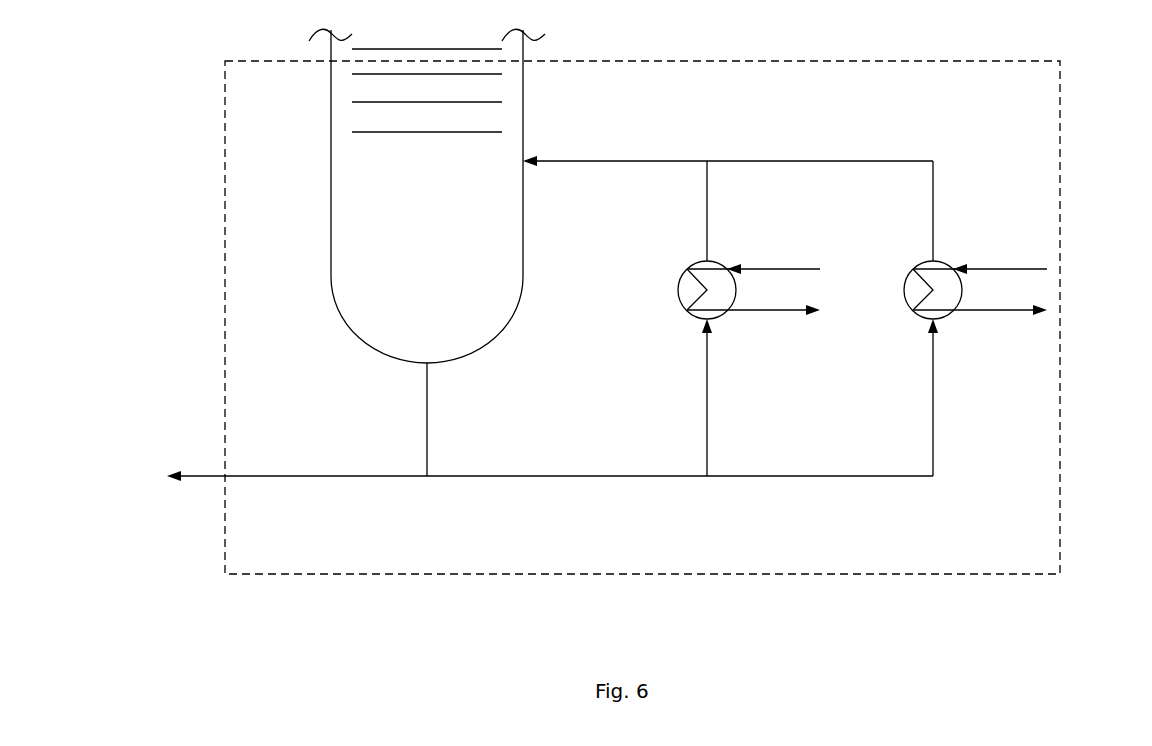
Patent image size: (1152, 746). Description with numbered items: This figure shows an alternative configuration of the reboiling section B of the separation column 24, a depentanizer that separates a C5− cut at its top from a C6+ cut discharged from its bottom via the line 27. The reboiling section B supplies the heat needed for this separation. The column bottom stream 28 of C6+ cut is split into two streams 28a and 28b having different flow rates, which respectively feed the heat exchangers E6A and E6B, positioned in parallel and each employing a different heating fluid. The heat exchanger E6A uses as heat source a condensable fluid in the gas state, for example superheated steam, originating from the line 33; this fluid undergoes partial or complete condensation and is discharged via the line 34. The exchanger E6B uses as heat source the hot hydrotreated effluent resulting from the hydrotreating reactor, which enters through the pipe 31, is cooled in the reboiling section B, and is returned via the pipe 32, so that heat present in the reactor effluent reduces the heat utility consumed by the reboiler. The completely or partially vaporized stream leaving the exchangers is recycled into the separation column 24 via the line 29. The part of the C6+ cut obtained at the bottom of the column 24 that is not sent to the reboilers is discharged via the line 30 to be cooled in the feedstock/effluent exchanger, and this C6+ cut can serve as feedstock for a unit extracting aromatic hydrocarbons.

The reboiling section B is at (1060, 100).
The separation column 24 is at (523, 112).
The line 27 is at (427, 408).
The column bottom stream 28 is at (512, 478).
The stream 28a is at (707, 425).
The stream 28b is at (933, 425).
The line 29 is at (630, 162).
The line 30 is at (308, 478).
The pipe 31 is at (1016, 268).
The pipe 32 is at (1017, 312).
The line 33 is at (790, 268).
The line 34 is at (792, 312).
The heat exchanger E6A is at (680, 290).
The heat exchanger E6B is at (906, 290).